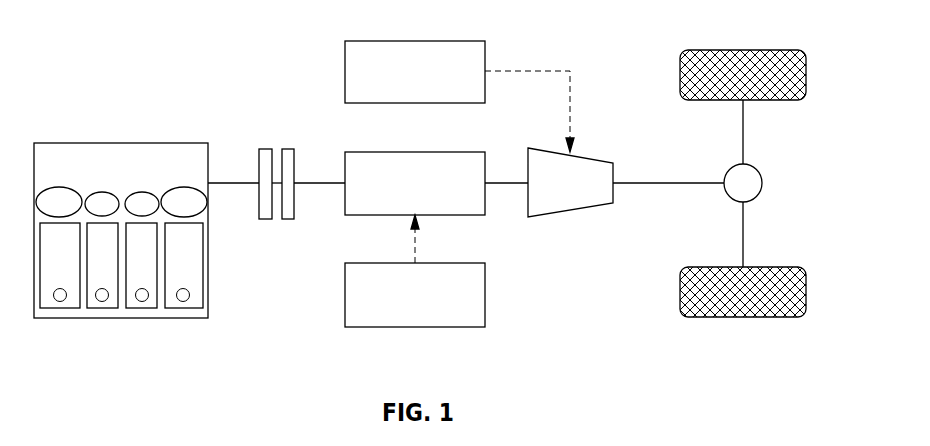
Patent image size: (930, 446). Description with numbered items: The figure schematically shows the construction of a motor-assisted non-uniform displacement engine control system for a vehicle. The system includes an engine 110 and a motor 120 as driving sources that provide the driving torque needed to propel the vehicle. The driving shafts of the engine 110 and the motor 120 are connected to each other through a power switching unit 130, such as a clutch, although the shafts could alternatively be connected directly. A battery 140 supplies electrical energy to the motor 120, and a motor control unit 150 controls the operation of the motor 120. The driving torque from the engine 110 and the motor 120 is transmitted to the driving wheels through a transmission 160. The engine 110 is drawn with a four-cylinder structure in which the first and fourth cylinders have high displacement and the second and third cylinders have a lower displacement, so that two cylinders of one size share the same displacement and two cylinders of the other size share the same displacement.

The engine 110 is at (118, 143).
The motor 120 is at (345, 153).
The power switching unit 130 is at (288, 149).
The battery 140 is at (345, 303).
The motor control unit 150 is at (345, 60).
The transmission 160 is at (587, 157).